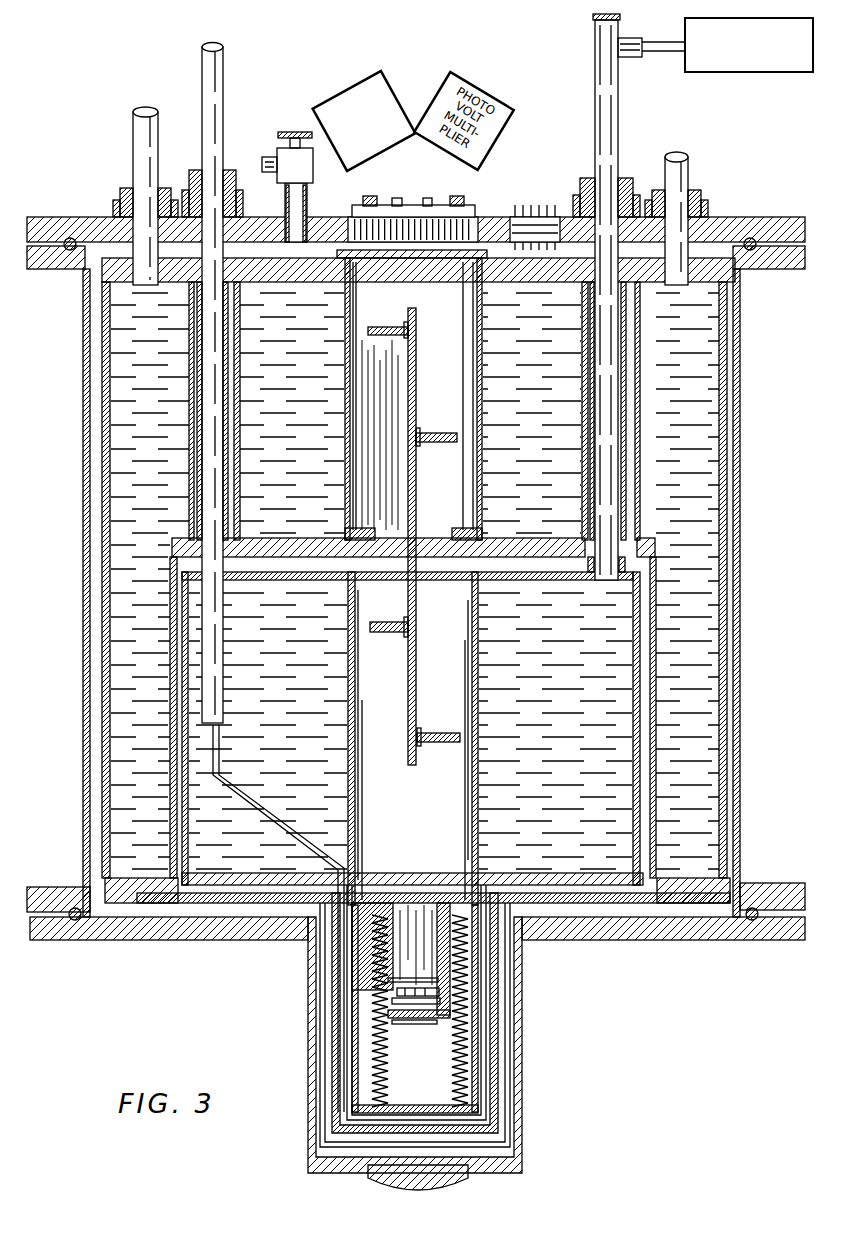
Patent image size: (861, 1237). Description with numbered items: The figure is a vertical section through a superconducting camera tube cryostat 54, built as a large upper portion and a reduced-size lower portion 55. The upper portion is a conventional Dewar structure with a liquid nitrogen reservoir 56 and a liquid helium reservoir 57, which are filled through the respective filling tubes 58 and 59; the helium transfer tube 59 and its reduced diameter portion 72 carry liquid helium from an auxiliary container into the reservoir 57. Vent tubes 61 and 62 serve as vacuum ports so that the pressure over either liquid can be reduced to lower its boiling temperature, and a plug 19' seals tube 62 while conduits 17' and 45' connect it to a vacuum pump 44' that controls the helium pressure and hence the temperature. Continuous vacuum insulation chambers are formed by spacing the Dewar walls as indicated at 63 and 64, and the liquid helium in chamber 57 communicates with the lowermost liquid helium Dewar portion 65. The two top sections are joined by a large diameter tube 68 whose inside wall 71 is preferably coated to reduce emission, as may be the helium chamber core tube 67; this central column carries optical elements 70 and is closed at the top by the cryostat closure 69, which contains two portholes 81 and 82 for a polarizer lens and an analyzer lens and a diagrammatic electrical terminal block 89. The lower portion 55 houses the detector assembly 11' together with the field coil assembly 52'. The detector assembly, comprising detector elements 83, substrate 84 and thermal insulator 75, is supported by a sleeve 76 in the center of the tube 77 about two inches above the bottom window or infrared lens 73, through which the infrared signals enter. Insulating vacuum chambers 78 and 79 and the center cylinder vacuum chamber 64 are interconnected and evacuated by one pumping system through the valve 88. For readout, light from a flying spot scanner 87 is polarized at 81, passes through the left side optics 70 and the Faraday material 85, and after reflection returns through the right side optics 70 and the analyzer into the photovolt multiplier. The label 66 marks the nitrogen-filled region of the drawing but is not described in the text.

The cryostat 54 is at (752, 442).
The lower portion 55 is at (523, 980).
The liquid nitrogen reservoir 56 is at (683, 693).
The liquid helium reservoir 57 is at (407, 721).
The filling tube 58 is at (131, 131).
The helium transfer tube 59 is at (222, 76).
The vent tube 61 is at (690, 178).
The vent tube 62 is at (620, 110).
The vacuum insulation chamber 63 is at (728, 402).
The center cylinder vacuum chamber 64 is at (652, 607).
The lowermost liquid helium Dewar portion 65 is at (501, 1071).
The liquid nitrogen chamber 66 is at (540, 418).
The helium chamber core tube 67 is at (472, 596).
The tube 68 is at (476, 498).
The cryostat closure 69 is at (452, 202).
The optical element 70 is at (393, 326).
The inside wall 71 is at (470, 370).
The reduced diameter portion 72 is at (262, 805).
The bottom window or infrared lens 73 is at (458, 1183).
The thermal insulator 75 is at (388, 1014).
The sleeve 76 is at (448, 1072).
The tube 77 is at (440, 915).
The insulating vacuum chamber 78 is at (500, 1100).
The insulating vacuum chamber 79 is at (503, 1136).
The porthole 81 is at (396, 197).
The porthole 82 is at (428, 197).
The detector elements 83 is at (392, 1001).
The substrate 84 is at (400, 1024).
The Faraday material 85 is at (386, 980).
The flying spot scanner 87 is at (395, 92).
The valve 88 is at (277, 150).
The electrical terminal block 89 is at (548, 215).
The detector assembly 11' is at (418, 963).
The conduit 17' is at (648, 36).
The plug 19' is at (586, 27).
The vacuum pump 44' is at (749, 65).
The conduit 45' is at (663, 66).
The field coil assembly 52' is at (462, 1009).